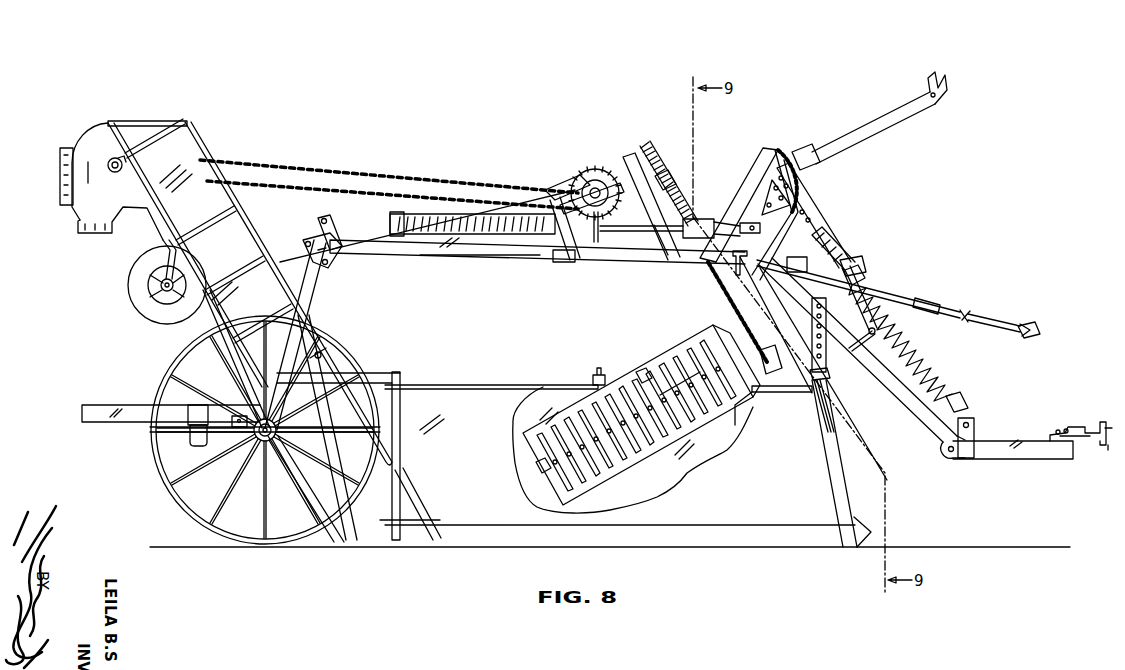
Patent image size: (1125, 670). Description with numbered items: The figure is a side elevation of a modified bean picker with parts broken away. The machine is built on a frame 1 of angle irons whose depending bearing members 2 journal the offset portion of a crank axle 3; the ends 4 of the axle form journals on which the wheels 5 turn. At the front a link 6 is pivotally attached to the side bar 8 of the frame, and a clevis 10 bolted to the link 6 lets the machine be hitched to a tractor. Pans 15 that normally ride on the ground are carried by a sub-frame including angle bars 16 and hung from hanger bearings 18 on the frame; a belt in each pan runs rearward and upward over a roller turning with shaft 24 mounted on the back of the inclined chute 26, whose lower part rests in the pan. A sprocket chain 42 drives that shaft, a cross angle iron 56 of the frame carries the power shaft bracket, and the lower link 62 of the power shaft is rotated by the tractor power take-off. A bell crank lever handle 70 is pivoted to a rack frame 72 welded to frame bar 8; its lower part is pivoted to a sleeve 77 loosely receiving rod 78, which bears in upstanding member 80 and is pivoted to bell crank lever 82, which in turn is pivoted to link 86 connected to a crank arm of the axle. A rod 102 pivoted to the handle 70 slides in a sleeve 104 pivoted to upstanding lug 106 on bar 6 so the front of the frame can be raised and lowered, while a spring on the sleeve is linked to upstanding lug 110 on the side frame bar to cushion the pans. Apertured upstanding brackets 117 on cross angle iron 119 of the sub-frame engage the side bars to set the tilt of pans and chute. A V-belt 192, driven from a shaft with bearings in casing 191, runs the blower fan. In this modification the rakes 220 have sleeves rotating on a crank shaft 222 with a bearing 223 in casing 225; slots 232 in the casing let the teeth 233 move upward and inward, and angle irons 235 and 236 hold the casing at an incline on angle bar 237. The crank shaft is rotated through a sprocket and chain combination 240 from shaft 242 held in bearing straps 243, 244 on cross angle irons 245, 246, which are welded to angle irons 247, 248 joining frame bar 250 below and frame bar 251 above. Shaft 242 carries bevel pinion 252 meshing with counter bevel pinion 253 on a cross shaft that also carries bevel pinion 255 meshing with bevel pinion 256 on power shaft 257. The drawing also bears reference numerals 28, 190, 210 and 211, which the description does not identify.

The frame 1 is at (85, 410).
The bearing members 2 is at (197, 412).
The crank axle 3 is at (200, 435).
The ends of crank axle 4 is at (263, 438).
The wheels 5 is at (152, 450).
The link 6 is at (1000, 453).
The side bar 8 is at (922, 430).
The clevis 10 is at (1093, 427).
The pans 15 is at (793, 544).
The angle bars 16 is at (838, 473).
The hanger bearings 18 is at (322, 350).
The shaft 24 is at (114, 172).
The chute 26 is at (187, 121).
The conveyor belt 28 is at (193, 157).
The sprocket chain 42 is at (355, 168).
The cross angle iron 56 is at (733, 265).
The lower link of power shaft 62 is at (1030, 330).
The bell crank lever handle 70 is at (890, 113).
The rack frame 72 is at (774, 150).
The sleeve 77 is at (703, 222).
The rod 78 is at (640, 246).
The upstanding member 80 is at (602, 240).
The bell crank lever 82 is at (334, 243).
The link 86 is at (287, 312).
The rod 102 is at (805, 208).
The sleeve 104 is at (834, 244).
The upstanding lug 106 is at (972, 433).
The upstanding lug 110 is at (862, 345).
The upstanding brackets 117 is at (811, 355).
The cross angle iron 119 is at (826, 375).
The caster fork 190 is at (160, 288).
The casing 191 is at (126, 294).
The V-belt 192 is at (366, 222).
The lower hood flange 210 is at (90, 236).
The hood flange 211 is at (60, 176).
The rakes 220 is at (632, 470).
The crank shaft 222 is at (770, 352).
The bearing 223 is at (682, 335).
The casing 225 is at (675, 345).
The slots 232 is at (640, 372).
The teeth 233 is at (692, 418).
The angle iron 235 is at (596, 372).
The angle iron 236 is at (757, 385).
The angle bar 237 is at (485, 383).
The sprocket and chain combination 240 is at (726, 287).
The shaft 242 is at (647, 150).
The bearing strap 243 is at (662, 182).
The bearing strap 244 is at (541, 257).
The cross angle iron 245 is at (630, 160).
The cross angle iron 246 is at (552, 197).
The angle iron 247 is at (673, 250).
The angle iron 248 is at (566, 262).
The frame bar 250 is at (450, 250).
The frame bar 251 is at (612, 163).
The bevel pinion 252 is at (607, 168).
The counter bevel pinion 253 is at (565, 175).
The bevel pinion 255 is at (575, 165).
The bevel pinion 256 is at (625, 226).
The power shaft 257 is at (873, 288).